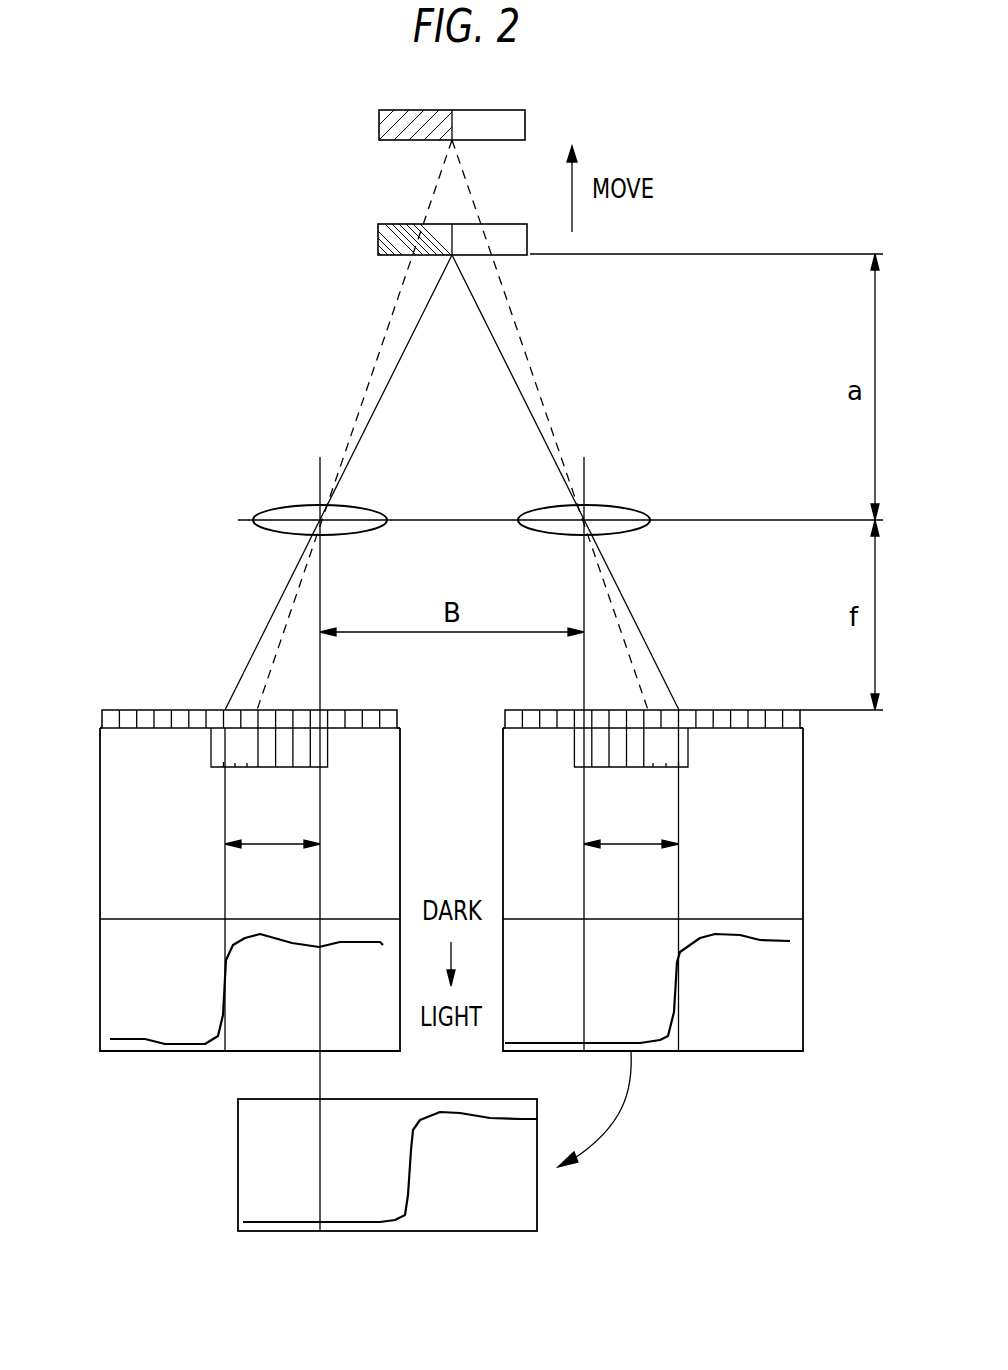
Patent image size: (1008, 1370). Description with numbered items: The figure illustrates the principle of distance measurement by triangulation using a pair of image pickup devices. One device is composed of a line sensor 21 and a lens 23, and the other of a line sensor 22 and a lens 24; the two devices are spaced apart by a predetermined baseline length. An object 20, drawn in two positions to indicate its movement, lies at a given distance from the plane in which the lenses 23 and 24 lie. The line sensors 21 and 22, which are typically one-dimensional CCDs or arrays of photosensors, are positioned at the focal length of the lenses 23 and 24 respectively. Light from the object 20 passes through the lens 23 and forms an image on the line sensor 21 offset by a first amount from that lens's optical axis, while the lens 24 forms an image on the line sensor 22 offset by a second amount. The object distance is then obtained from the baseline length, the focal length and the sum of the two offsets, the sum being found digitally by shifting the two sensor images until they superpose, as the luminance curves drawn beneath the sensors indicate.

The object 20 is at (378, 242).
The line sensor 21 is at (102, 718).
The line sensor 22 is at (800, 720).
The lens 23 is at (264, 512).
The lens 24 is at (641, 512).